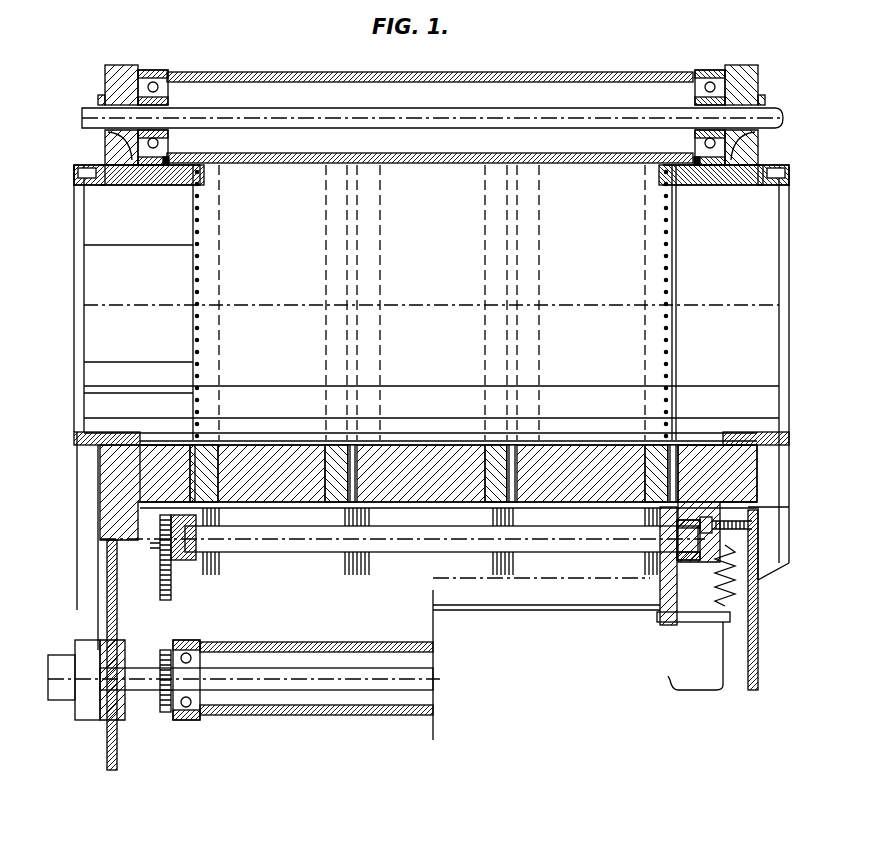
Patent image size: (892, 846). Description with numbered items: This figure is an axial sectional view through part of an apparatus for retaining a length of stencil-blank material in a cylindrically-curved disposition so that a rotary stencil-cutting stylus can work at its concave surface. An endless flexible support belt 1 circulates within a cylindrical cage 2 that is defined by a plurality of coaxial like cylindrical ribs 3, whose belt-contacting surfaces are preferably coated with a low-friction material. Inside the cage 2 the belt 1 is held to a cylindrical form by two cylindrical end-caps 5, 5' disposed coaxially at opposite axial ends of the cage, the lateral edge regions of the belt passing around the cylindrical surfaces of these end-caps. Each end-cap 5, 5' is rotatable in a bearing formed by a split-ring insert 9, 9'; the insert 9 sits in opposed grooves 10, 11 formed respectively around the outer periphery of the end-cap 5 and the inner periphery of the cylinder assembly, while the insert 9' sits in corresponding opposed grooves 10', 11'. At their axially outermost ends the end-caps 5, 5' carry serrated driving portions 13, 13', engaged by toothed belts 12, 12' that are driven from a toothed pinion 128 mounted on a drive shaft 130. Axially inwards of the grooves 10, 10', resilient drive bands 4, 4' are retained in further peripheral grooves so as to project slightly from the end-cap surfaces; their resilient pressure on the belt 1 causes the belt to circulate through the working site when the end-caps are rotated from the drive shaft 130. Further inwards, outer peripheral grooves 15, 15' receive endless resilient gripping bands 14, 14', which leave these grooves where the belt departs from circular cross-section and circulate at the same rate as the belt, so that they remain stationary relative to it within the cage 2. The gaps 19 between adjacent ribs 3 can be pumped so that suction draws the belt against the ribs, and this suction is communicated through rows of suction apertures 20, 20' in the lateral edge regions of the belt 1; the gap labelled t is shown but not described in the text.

The endless flexible support belt 1 is at (185, 470).
The cylindrical cage 2 is at (220, 472).
The cylindrical ribs 3 is at (205, 323).
The drive band 4 is at (117, 492).
The drive band 4' is at (754, 503).
The cylindrical end-cap 5 is at (407, 305).
The cylindrical end-cap 5' is at (774, 365).
The split-ring insert 9 is at (415, 115).
The split-ring insert 9' is at (789, 420).
The groove 10 is at (77, 180).
The groove 10' is at (795, 186).
The groove 11 is at (121, 125).
The groove 11' is at (752, 125).
The toothed belt 12 is at (80, 601).
The toothed belt 12' is at (751, 598).
The serrated driving portion 13 is at (87, 433).
The serrated driving portion 13' is at (786, 437).
The gripping band 14 is at (201, 104).
The gripping band 14' is at (677, 104).
The outer peripheral groove 15 is at (118, 195).
The outer peripheral groove 15' is at (754, 201).
The gaps 19 is at (195, 475).
The suction apertures 20 is at (117, 303).
The suction apertures 20' is at (752, 303).
The toothed pinion 128 is at (90, 660).
The drive shaft 130 is at (90, 700).
The gap t is at (132, 440).